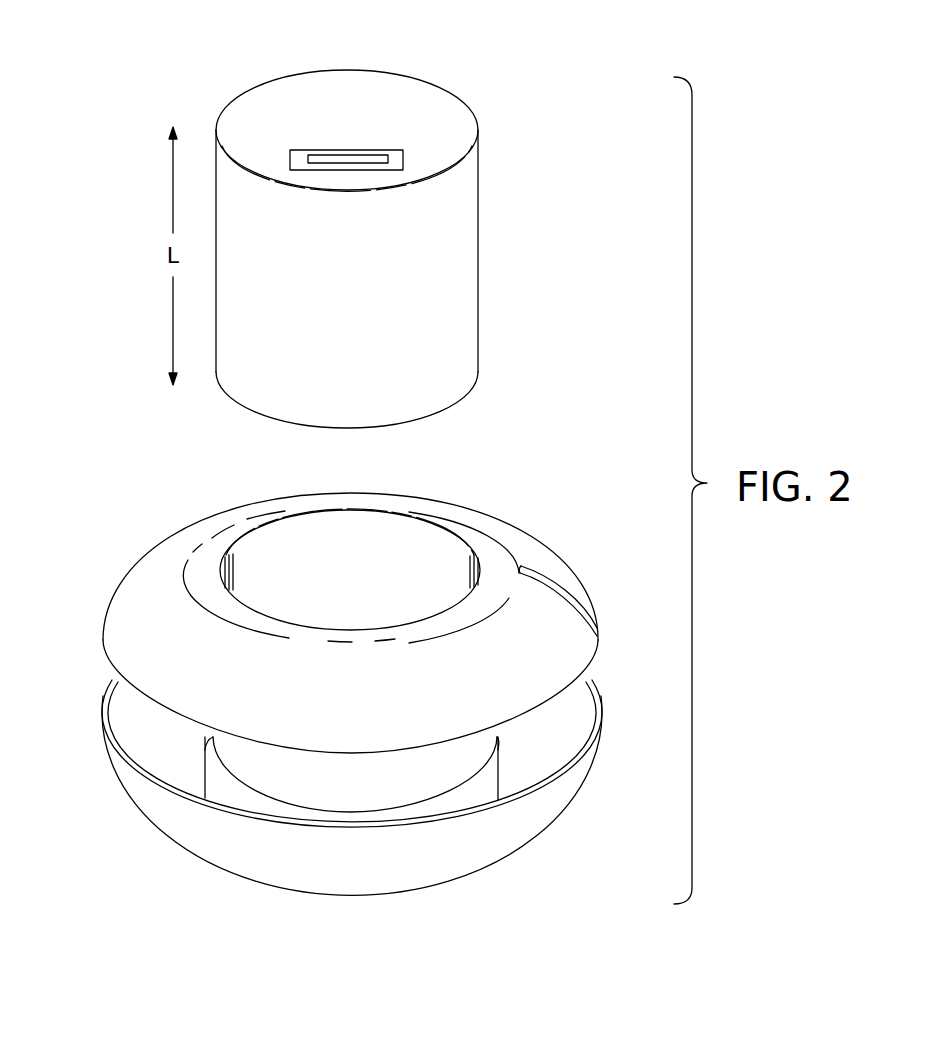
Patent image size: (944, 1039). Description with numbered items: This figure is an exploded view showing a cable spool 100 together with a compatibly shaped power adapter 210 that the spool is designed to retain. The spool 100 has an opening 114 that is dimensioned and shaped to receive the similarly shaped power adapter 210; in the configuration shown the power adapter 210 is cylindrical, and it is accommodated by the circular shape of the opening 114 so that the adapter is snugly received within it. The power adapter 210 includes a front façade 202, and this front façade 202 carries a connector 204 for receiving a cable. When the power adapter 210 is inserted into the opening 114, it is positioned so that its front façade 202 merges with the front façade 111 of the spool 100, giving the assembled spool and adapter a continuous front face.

The cable spool 100 is at (316, 678).
The front façade 111 is at (350, 607).
The opening 114 is at (428, 530).
The front façade 202 is at (354, 104).
The connector 204 is at (348, 150).
The power adapter 210 is at (395, 223).